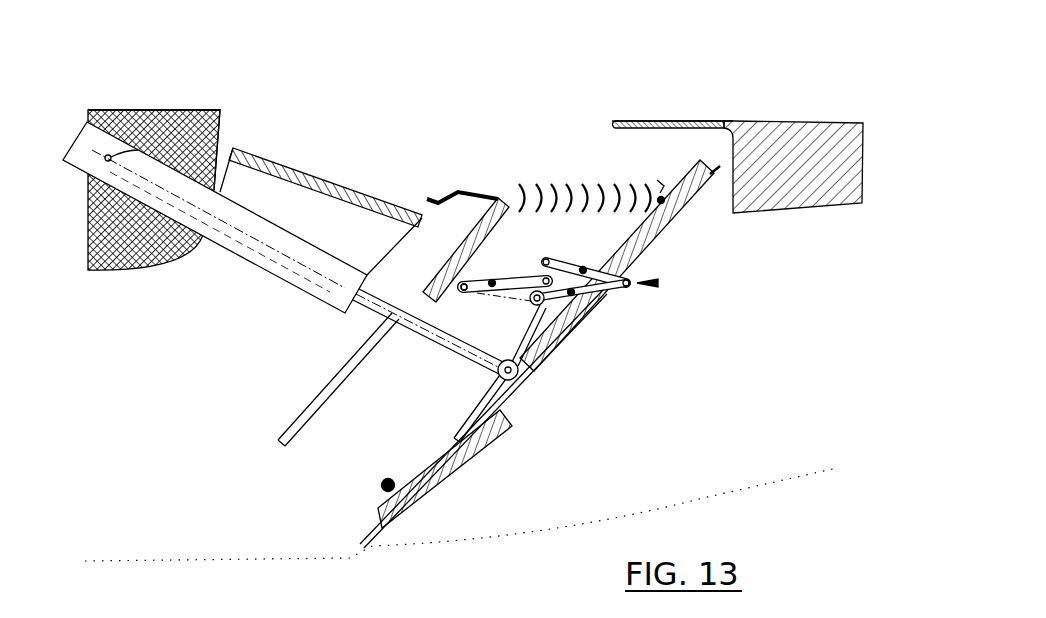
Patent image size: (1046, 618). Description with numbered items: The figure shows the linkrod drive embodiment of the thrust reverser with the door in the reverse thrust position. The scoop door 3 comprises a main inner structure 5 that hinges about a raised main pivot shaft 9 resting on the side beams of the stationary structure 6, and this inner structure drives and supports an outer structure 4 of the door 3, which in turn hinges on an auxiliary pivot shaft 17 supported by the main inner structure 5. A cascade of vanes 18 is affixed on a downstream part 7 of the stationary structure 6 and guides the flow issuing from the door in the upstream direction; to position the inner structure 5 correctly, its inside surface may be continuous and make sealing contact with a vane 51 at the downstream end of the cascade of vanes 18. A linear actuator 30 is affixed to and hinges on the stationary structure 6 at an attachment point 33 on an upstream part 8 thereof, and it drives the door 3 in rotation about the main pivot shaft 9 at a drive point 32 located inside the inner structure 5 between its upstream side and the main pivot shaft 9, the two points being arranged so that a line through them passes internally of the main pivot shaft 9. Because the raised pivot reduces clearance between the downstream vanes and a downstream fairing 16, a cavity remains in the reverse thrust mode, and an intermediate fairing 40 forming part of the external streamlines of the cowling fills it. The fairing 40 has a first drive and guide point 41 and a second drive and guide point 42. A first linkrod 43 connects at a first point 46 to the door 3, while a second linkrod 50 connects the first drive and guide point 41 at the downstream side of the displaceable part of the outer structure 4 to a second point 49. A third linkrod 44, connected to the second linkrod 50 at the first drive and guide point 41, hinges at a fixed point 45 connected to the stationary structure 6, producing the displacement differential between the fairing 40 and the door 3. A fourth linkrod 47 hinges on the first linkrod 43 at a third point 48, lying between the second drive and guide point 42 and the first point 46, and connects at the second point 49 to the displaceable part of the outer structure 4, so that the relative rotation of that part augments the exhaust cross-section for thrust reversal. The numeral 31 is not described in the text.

The scoop door 3 is at (343, 448).
The outer structure 4 is at (500, 201).
The main inner structure 5 is at (443, 462).
The stationary structure 6 is at (120, 100).
The downstream part 7 is at (780, 143).
The upstream part 8 is at (129, 228).
The main pivot shaft 9 is at (666, 200).
The downstream fairing 16 is at (637, 122).
The auxiliary pivot shaft 17 is at (380, 486).
The cascade of vanes 18 is at (535, 190).
The linear actuator 30 is at (277, 265).
The cover plate 31 is at (322, 180).
The drive point 32 is at (509, 382).
The attachment point 33 is at (170, 124).
The intermediate fairing 40 is at (427, 200).
The first drive and guide point 41 is at (465, 282).
The second drive and guide point 42 is at (545, 260).
The first linkrod 43 is at (628, 247).
The third linkrod 44 is at (492, 281).
The fixed point 45 is at (544, 305).
The first point 46 is at (659, 283).
The fourth linkrod 47 is at (572, 296).
The third point 48 is at (629, 288).
The second point 49 is at (497, 370).
The second linkrod 50 is at (503, 299).
The vane 51 is at (668, 183).